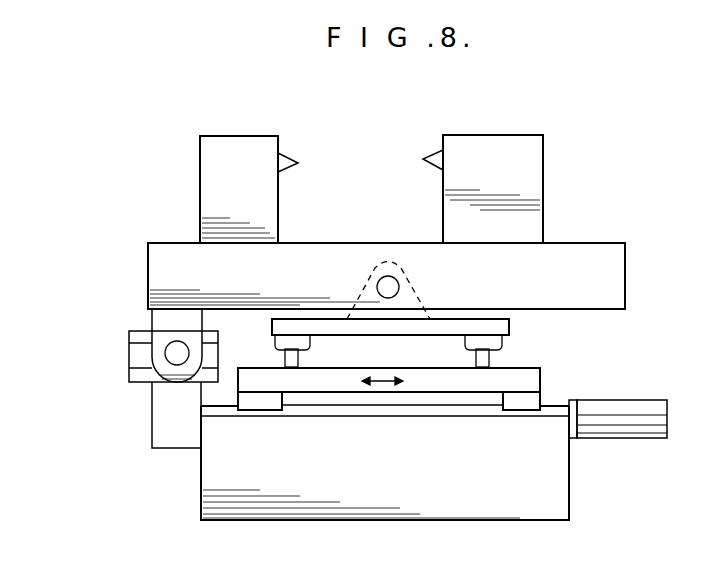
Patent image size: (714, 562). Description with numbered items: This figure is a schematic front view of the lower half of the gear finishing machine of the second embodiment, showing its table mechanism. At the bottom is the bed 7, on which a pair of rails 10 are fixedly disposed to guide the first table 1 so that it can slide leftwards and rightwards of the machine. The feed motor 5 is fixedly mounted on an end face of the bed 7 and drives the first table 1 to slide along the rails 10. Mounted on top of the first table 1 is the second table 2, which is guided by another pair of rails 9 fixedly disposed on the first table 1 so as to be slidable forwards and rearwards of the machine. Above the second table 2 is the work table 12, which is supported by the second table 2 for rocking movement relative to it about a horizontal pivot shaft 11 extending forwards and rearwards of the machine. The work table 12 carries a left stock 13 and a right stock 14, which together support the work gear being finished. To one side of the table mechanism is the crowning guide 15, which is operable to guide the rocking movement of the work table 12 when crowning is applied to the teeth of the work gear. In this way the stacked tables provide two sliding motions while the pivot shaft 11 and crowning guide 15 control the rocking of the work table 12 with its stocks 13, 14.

The first table 1 is at (333, 380).
The second table 2 is at (496, 330).
The feed motor 5 is at (630, 410).
The bed 7 is at (393, 475).
The rails 9 is at (287, 358).
The rails 10 is at (447, 412).
The pivot shaft 11 is at (388, 287).
The work table 12 is at (585, 264).
The left stock 13 is at (225, 168).
The right stock 14 is at (498, 165).
The crowning guide 15 is at (143, 372).